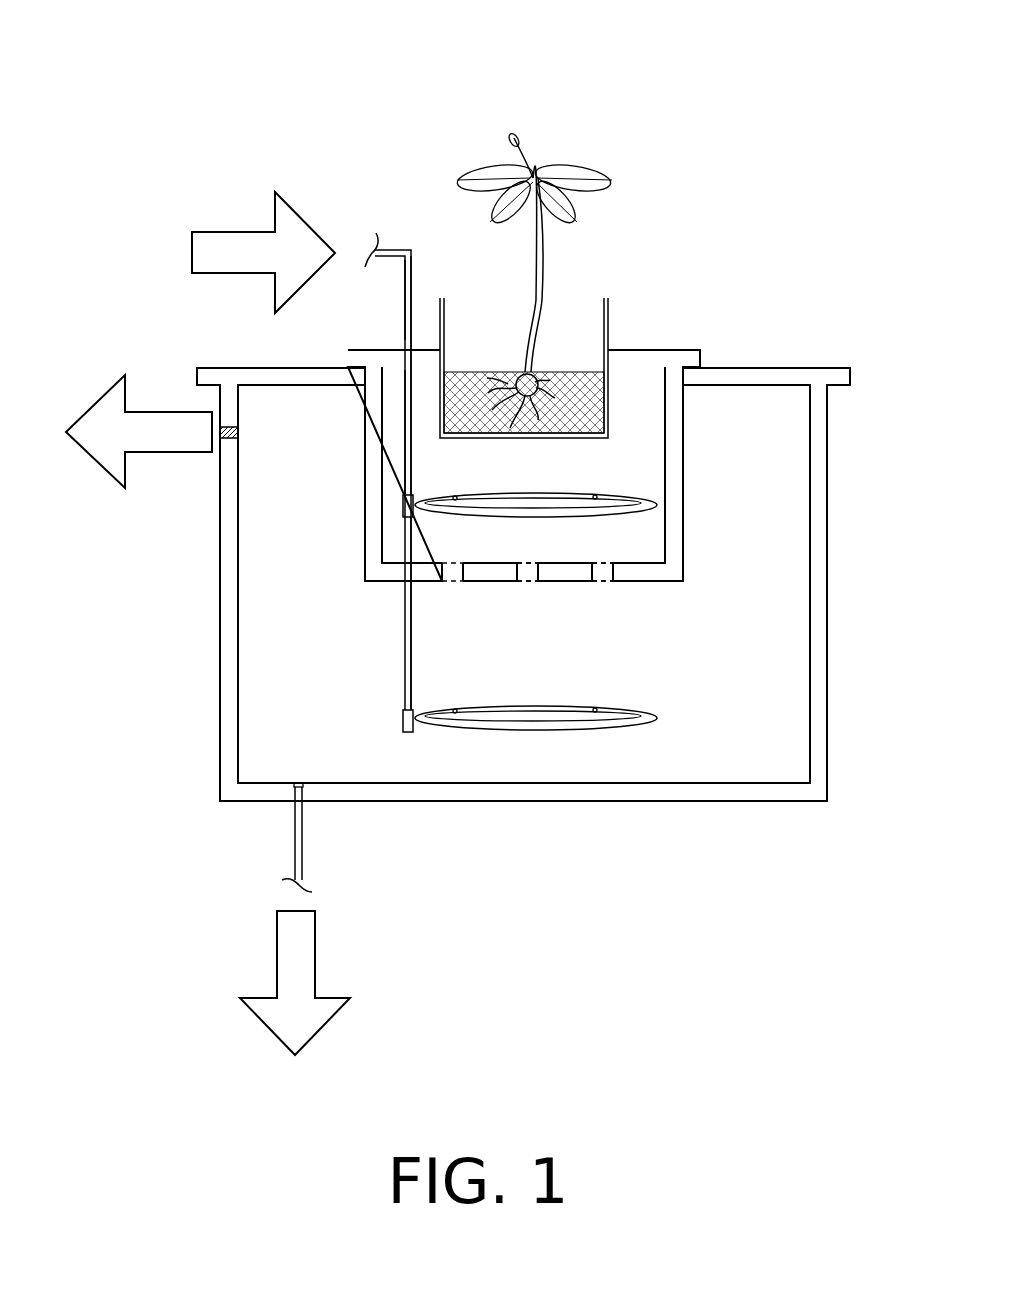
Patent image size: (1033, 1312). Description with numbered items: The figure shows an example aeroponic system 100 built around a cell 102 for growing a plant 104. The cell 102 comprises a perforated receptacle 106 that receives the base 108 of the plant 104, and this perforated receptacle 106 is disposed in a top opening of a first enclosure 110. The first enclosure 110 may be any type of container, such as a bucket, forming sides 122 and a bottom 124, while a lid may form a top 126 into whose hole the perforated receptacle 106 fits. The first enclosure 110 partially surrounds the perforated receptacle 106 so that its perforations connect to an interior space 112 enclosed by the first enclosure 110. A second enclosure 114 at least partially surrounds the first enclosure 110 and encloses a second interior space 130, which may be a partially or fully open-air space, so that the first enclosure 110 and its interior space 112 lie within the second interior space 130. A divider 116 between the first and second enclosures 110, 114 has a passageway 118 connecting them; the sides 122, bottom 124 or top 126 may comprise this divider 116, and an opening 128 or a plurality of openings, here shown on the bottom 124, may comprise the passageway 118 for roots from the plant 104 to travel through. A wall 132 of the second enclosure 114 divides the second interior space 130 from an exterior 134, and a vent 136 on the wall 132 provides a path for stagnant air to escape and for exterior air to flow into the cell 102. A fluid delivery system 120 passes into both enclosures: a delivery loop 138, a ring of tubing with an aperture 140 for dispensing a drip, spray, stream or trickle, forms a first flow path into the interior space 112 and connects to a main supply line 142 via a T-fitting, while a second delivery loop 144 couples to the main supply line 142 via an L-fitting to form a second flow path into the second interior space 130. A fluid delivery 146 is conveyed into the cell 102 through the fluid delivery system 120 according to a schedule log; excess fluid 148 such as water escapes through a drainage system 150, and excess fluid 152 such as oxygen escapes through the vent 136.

The aeroponic system 100 is at (166, 38).
The cell 102 is at (812, 255).
The plant 104 is at (573, 128).
The perforated receptacle 106 is at (607, 316).
The base of the plant 108 is at (563, 303).
The first enclosure 110 is at (703, 550).
The interior space 112 is at (600, 473).
The second enclosure 114 is at (842, 660).
The divider 116 is at (658, 573).
The passageway 118 is at (602, 573).
The fluid delivery system 120 is at (372, 210).
The sides 122 is at (673, 487).
The bottom 124 is at (395, 572).
The top 126 is at (395, 362).
The opening 128 is at (525, 573).
The second interior space 130 is at (717, 474).
The wall 132 is at (818, 513).
The exterior 134 is at (856, 474).
The vent 136 is at (228, 439).
The delivery loop 138 is at (543, 512).
The aperture 140 is at (456, 497).
The main supply line 142 is at (408, 280).
The second delivery loop 144 is at (543, 725).
The fluid delivery 146 is at (275, 264).
The excess fluid 148 is at (275, 1029).
The drainage system 150 is at (326, 878).
The excess fluid 152 is at (85, 441).